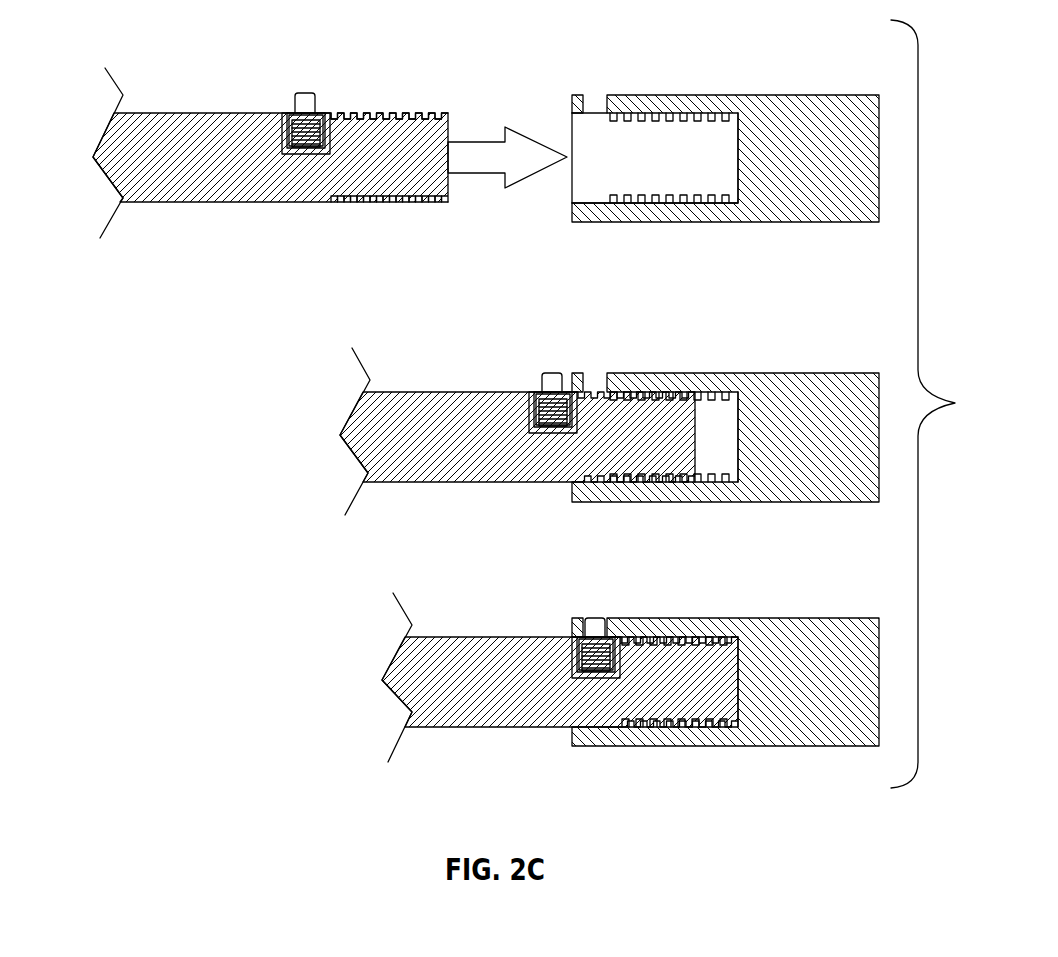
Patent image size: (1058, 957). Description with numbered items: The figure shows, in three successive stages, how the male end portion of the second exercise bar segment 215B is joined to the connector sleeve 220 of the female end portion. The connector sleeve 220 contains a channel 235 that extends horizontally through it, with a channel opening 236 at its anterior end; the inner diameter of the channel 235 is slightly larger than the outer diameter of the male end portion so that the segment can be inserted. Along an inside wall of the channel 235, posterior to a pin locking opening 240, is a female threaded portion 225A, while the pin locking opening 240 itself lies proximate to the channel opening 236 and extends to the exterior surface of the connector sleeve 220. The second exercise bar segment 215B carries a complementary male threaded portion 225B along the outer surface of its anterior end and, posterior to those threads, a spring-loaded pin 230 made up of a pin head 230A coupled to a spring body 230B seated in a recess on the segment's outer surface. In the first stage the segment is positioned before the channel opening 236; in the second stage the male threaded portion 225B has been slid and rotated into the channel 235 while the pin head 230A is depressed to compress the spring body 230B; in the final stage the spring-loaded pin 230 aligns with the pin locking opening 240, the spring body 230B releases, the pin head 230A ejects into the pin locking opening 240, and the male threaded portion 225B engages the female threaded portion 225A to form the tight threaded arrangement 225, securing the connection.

The second exercise bar segment 215B is at (162, 121).
The connector sleeve 220 is at (815, 106).
The threaded arrangement 225 is at (620, 733).
The female threaded portion 225A is at (717, 204).
The male threaded portion 225B is at (383, 203).
The spring-loaded pin 230 is at (308, 93).
The pin head 230A is at (553, 372).
The spring body 230B is at (543, 400).
The channel 235 is at (603, 188).
The channel opening 236 is at (568, 194).
The pin locking opening 240 is at (597, 106).